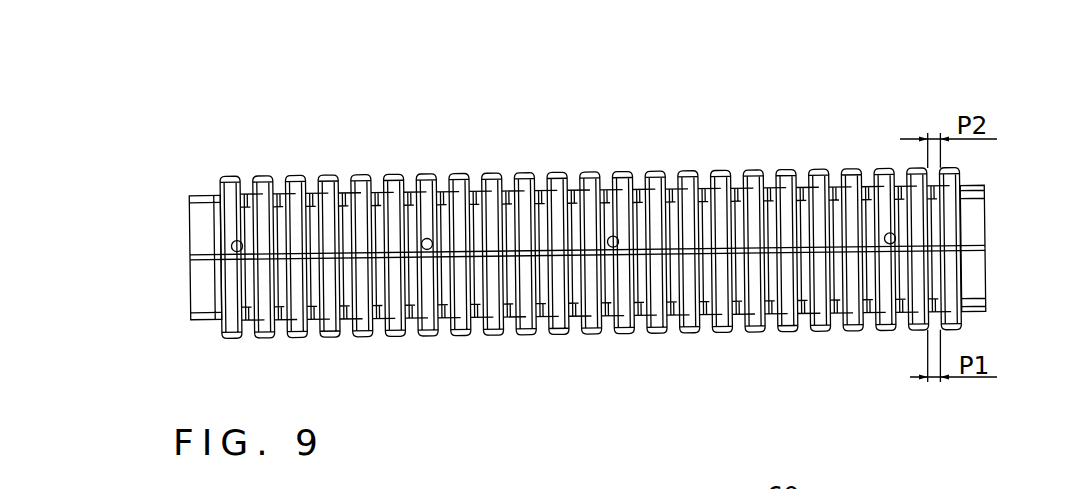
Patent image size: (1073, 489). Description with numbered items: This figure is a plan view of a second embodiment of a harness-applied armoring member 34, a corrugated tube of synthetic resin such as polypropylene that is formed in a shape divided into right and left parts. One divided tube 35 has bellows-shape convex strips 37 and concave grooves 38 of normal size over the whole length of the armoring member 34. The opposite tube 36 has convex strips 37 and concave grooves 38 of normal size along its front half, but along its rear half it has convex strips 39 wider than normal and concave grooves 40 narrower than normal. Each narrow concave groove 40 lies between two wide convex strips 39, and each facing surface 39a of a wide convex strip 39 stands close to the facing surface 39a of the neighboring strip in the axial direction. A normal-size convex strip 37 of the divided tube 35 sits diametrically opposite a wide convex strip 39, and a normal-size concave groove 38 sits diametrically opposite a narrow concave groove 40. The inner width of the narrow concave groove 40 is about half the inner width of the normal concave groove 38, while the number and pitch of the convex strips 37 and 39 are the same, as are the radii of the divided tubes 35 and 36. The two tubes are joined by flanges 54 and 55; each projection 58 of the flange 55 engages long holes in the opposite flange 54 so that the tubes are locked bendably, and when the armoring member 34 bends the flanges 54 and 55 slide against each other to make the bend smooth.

The harness-applied armoring member 34 is at (783, 106).
The divided tube 35 is at (990, 195).
The opposite tube 36 is at (990, 295).
The convex strip 37 is at (720, 175).
The concave groove 38 is at (706, 178).
The wide convex strip 39 is at (663, 335).
The facing surface 39a is at (643, 333).
The narrow concave groove 40 is at (677, 333).
The flange 54 is at (973, 257).
The flange 55 is at (974, 242).
The projection 58 is at (878, 170).